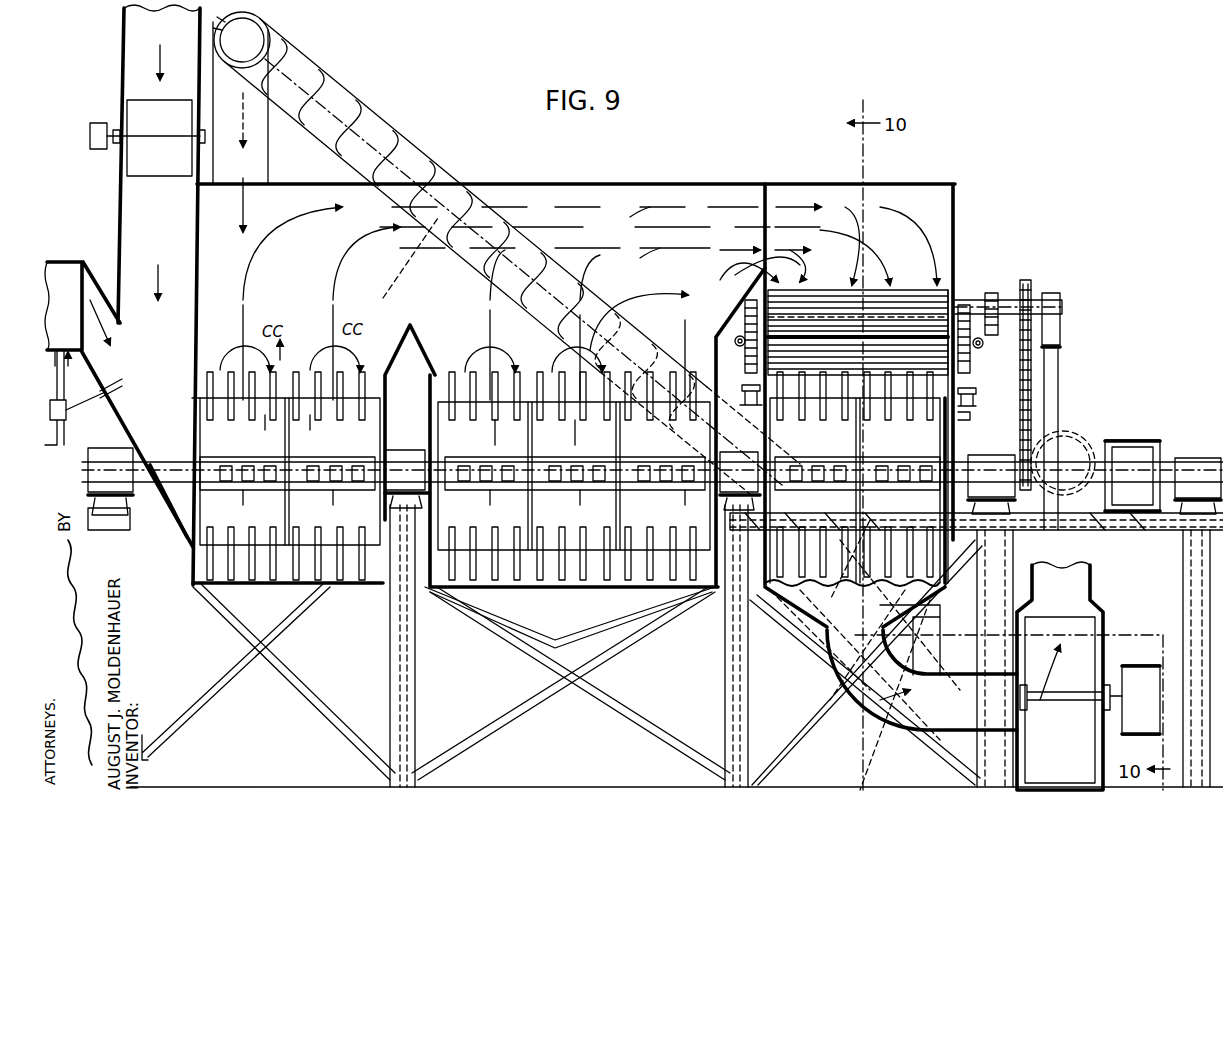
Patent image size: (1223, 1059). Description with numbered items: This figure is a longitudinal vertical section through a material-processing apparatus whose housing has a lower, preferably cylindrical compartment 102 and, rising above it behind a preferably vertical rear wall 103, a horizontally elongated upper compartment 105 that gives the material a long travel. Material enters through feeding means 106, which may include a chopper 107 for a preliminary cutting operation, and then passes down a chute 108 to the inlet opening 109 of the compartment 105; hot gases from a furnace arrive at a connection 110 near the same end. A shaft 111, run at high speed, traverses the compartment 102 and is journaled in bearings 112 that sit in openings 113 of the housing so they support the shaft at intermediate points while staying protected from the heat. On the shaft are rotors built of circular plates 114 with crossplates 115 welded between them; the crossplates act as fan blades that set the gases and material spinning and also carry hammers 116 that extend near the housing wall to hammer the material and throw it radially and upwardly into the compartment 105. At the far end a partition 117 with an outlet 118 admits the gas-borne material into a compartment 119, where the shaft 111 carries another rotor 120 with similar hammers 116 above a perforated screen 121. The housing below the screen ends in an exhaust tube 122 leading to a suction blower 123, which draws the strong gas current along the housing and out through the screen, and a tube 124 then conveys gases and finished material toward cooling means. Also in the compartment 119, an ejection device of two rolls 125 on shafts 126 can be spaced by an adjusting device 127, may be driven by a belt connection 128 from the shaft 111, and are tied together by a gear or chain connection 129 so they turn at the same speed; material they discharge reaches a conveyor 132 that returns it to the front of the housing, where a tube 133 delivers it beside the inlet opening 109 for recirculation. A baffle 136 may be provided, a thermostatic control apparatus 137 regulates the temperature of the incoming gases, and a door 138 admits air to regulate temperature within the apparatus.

The compartment 102 is at (577, 587).
The rear wall 103 is at (511, 192).
The compartment 105 is at (630, 237).
The feeding means 106 is at (137, 34).
The chopper 107 is at (133, 156).
The chute 108 is at (136, 216).
The inlet opening 109 is at (190, 414).
The connection 110 is at (71, 397).
The shaft 111 is at (170, 470).
The bearings 112 is at (105, 448).
The openings 113 is at (388, 585).
The circular plates 114 is at (200, 440).
The crossplates 115 is at (342, 388).
The hammers 116 is at (275, 378).
The partition 117 is at (777, 283).
The outlet 118 is at (768, 222).
The compartment 119 is at (920, 240).
The rotor 120 is at (930, 448).
The perforated screen 121 is at (828, 615).
The exhaust tube 122 is at (890, 645).
The suction blower 123 is at (1104, 627).
The tube 124 is at (1085, 545).
The rolls 125 is at (860, 352).
The shafts 126 is at (991, 300).
The adjusting device 127 is at (740, 395).
The belt connection 128 is at (1020, 426).
The gear or chain connection 129 is at (993, 349).
The conveyor 132 is at (398, 130).
The tube 133 is at (265, 150).
The baffle 136 is at (398, 270).
The thermostatic control apparatus 137 is at (62, 410).
The door 138 is at (153, 548).